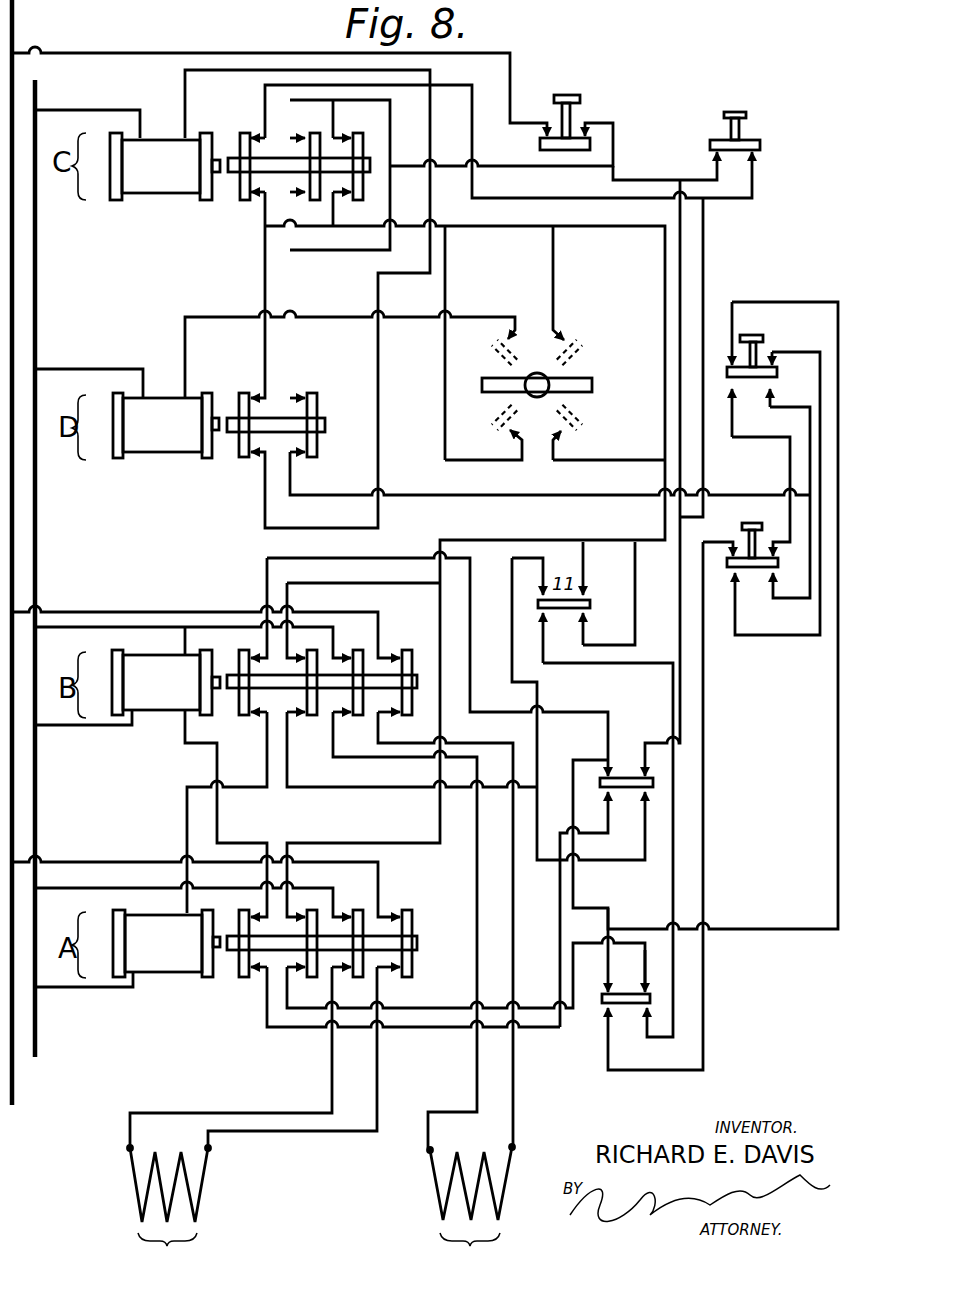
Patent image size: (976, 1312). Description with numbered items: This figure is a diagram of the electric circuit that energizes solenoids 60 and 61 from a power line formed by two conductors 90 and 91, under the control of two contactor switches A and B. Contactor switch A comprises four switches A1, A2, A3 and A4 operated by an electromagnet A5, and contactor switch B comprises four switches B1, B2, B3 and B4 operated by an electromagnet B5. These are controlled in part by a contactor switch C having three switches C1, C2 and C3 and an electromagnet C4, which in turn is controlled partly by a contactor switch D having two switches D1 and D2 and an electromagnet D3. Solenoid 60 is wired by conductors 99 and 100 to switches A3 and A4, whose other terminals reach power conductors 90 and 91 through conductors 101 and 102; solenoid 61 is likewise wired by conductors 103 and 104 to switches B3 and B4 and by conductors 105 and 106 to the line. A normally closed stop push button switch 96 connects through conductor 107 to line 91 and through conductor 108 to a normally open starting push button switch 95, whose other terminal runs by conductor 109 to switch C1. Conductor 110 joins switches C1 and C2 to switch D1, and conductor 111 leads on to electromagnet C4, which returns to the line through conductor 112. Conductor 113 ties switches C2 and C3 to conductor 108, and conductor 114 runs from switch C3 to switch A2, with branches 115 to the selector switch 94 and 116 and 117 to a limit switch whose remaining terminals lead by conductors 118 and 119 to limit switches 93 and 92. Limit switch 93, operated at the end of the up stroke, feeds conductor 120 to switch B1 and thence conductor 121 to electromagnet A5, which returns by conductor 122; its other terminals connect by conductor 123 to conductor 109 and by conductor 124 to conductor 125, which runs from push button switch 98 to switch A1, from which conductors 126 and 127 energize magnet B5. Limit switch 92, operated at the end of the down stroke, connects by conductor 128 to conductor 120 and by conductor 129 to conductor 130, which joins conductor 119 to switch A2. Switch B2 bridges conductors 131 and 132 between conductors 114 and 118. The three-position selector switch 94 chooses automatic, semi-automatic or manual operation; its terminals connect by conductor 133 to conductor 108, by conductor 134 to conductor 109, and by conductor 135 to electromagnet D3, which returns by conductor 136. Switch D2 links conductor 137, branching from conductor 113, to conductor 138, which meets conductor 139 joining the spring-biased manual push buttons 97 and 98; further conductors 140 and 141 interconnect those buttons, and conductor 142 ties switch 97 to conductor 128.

The solenoid 60 is at (169, 1209).
The solenoid 61 is at (471, 1208).
The power conductor 90 is at (37, 1050).
The power conductor 91 is at (14, 1088).
The limit switch 92 is at (627, 1005).
The limit switch 93 is at (625, 788).
The selector switch 94 is at (484, 387).
The starting push button switch 95 is at (760, 146).
The stop push button switch 96 is at (540, 146).
The push button switch 97 is at (752, 342).
The push button switch 98 is at (764, 530).
The conductor 99 is at (234, 1112).
The conductor 100 is at (320, 1132).
The conductor 101 is at (93, 888).
The conductor 102 is at (116, 862).
The conductor 103 is at (477, 1072).
The conductor 104 is at (513, 1100).
The conductor 105 is at (103, 627).
The conductor 106 is at (152, 612).
The conductor 107 is at (171, 54).
The conductor 108 is at (648, 181).
The conductor 109 is at (265, 100).
The conductor 110 is at (265, 268).
The conductor 111 is at (185, 75).
The conductor 112 is at (106, 110).
The conductor 113 is at (387, 138).
The conductor 114 is at (527, 228).
The conductor 115 is at (553, 258).
The conductor 116 is at (583, 568).
The conductor 117 is at (628, 649).
The conductor 118 is at (512, 570).
The conductor 119 is at (630, 665).
The conductor 120 is at (267, 573).
The conductor 121 is at (187, 823).
The conductor 122 is at (117, 990).
The conductor 123 is at (703, 243).
The conductor 124 is at (560, 940).
The conductor 125 is at (703, 767).
The conductor 126 is at (217, 763).
The conductor 127 is at (68, 726).
The conductor 128 is at (608, 915).
The conductor 129 is at (645, 972).
The conductor 130 is at (315, 1008).
The conductor 131 is at (398, 583).
The conductor 132 is at (391, 809).
The conductor 133 is at (635, 462).
The conductor 134 is at (445, 368).
The conductor 135 is at (511, 316).
The conductor 136 is at (111, 369).
The conductor 137 is at (367, 255).
The conductor 138 is at (458, 495).
The conductor 139 is at (810, 425).
The conductor 140 is at (790, 462).
The conductor 141 is at (812, 636).
The conductor 142 is at (810, 302).
The switch A1 is at (244, 978).
The switch A2 is at (313, 978).
The switch A3 is at (359, 978).
The switch A4 is at (406, 978).
The electromagnet A5 is at (166, 943).
The switch B1 is at (247, 716).
The switch B2 is at (314, 716).
The switch B3 is at (360, 716).
The switch B4 is at (406, 716).
The electromagnet B5 is at (166, 682).
The switch C1 is at (244, 202).
The switch C2 is at (313, 203).
The switch C3 is at (353, 202).
The electromagnet C4 is at (165, 166).
The switch D1 is at (245, 458).
The switch D2 is at (312, 458).
The electromagnet D3 is at (166, 425).